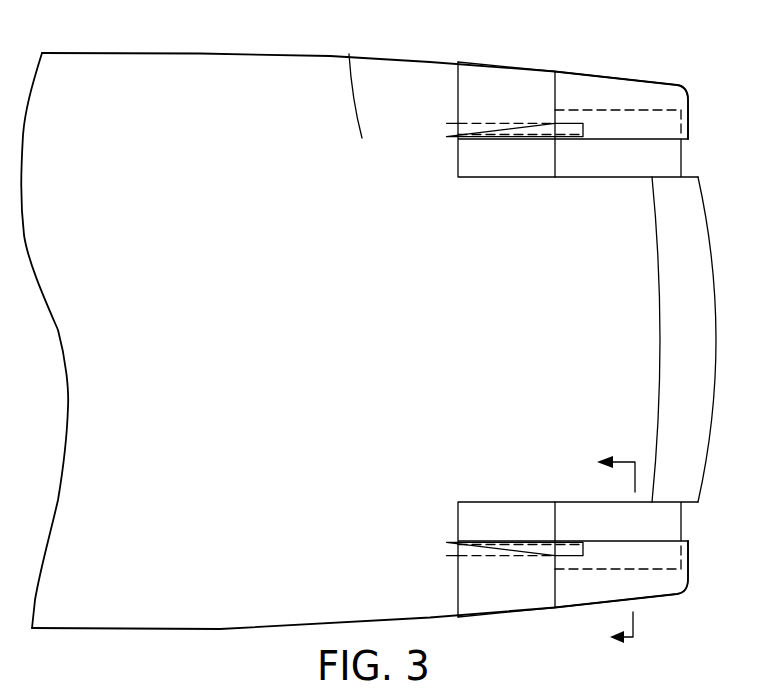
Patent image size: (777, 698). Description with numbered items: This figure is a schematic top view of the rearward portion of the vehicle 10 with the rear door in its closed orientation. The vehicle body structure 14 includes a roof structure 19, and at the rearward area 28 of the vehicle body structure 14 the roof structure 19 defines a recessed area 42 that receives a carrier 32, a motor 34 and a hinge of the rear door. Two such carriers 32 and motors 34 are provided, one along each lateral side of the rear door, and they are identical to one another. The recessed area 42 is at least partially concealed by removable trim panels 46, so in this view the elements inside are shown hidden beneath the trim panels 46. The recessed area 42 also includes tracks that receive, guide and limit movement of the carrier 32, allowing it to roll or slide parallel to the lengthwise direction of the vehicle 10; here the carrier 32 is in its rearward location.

The vehicle 10 is at (114, 33).
The vehicle body structure 14 is at (210, 46).
The roof structure 19 is at (350, 81).
The rearward area 28 is at (598, 64).
The carrier 32 is at (657, 155).
The motor 34 is at (450, 120).
The recessed area 42 is at (563, 102).
The trim panels 46 is at (503, 100).